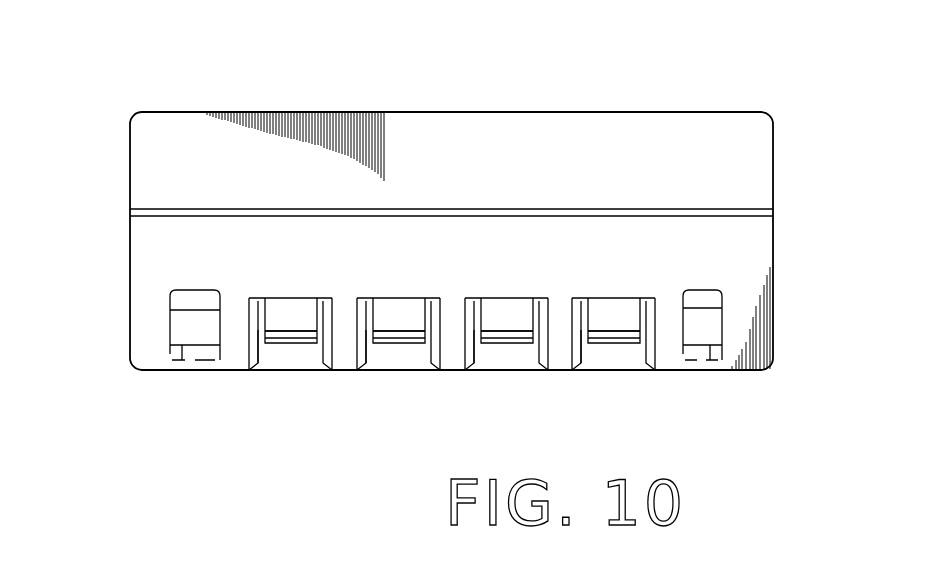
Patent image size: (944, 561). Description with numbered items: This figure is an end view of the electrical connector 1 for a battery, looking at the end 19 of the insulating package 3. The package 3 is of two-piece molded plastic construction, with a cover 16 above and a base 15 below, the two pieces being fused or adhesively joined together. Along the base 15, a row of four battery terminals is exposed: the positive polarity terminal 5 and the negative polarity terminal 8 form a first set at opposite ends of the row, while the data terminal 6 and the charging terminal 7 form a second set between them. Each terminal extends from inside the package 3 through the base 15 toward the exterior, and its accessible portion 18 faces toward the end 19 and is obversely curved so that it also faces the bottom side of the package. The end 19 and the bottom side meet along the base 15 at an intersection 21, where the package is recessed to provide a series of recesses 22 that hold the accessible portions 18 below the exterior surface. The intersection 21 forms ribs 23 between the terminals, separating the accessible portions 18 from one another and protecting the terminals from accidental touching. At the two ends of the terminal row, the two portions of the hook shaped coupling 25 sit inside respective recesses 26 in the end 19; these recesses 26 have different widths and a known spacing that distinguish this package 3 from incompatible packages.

The electrical connector 1 is at (772, 123).
The insulating package 3 is at (128, 170).
The positive polarity terminal 5 is at (618, 325).
The data terminal 6 is at (498, 322).
The charging terminal 7 is at (398, 322).
The negative polarity terminal 8 is at (295, 322).
The base 15 is at (128, 272).
The cover 16 is at (128, 135).
The accessible portion 18 is at (283, 305).
The end 19 is at (549, 250).
The intersection 21 is at (212, 372).
The recesses 22 is at (258, 356).
The ribs 23 is at (347, 357).
The hook shaped coupling 25 is at (195, 322).
The recesses 26 is at (218, 301).